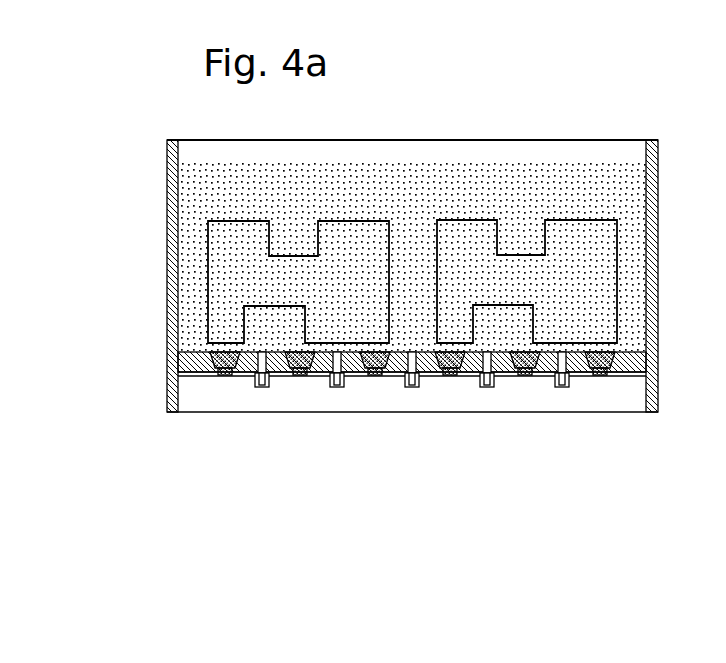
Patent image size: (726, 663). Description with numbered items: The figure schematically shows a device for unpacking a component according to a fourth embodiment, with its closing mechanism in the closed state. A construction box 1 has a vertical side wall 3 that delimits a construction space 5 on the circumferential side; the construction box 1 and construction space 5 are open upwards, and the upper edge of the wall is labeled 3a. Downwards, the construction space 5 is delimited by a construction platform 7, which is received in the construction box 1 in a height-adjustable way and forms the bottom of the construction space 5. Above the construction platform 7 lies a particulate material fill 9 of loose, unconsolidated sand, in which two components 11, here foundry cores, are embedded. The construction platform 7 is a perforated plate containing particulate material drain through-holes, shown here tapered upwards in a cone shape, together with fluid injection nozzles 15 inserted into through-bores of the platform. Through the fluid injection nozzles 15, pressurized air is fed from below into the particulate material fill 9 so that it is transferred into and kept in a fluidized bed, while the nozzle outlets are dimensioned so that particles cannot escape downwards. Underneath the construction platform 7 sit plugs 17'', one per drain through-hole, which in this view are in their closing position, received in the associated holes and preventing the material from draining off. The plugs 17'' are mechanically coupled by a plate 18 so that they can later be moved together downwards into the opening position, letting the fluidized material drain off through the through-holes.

The construction box 1 is at (517, 113).
The side wall 3 is at (172, 181).
The housing opening edge 3a is at (412, 127).
The construction space 5 is at (412, 153).
The construction platform 7 is at (180, 360).
The particulate material fill 9 is at (196, 208).
The components 11 is at (227, 312).
The fluid injection nozzles 15 is at (257, 383).
The plugs 17'' is at (339, 373).
The plate 18 is at (215, 375).